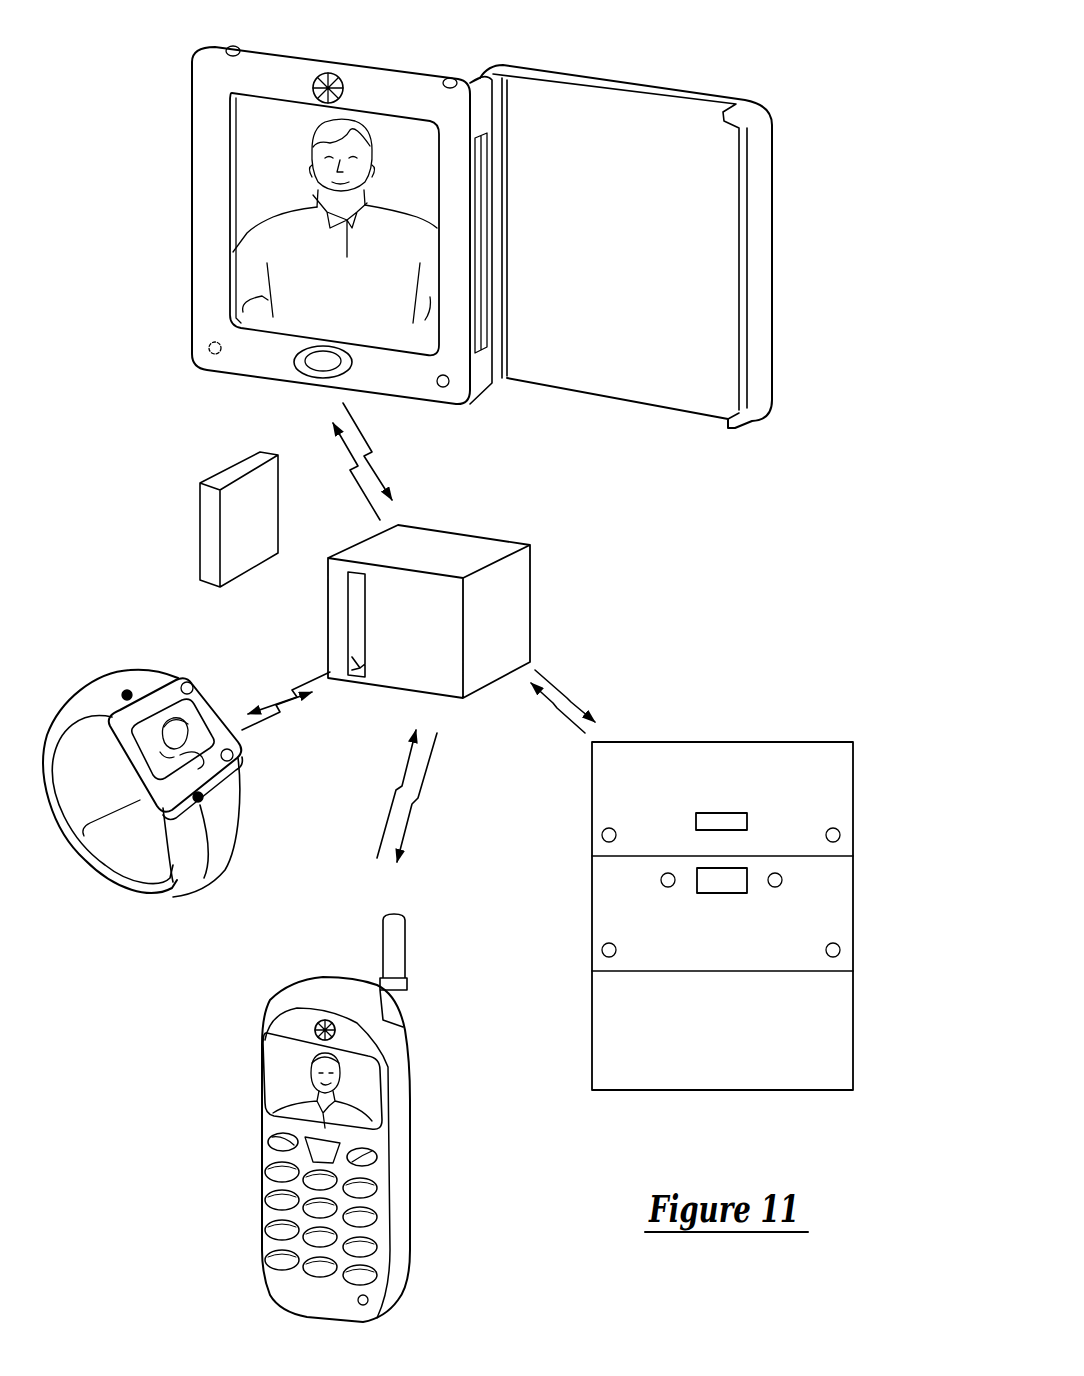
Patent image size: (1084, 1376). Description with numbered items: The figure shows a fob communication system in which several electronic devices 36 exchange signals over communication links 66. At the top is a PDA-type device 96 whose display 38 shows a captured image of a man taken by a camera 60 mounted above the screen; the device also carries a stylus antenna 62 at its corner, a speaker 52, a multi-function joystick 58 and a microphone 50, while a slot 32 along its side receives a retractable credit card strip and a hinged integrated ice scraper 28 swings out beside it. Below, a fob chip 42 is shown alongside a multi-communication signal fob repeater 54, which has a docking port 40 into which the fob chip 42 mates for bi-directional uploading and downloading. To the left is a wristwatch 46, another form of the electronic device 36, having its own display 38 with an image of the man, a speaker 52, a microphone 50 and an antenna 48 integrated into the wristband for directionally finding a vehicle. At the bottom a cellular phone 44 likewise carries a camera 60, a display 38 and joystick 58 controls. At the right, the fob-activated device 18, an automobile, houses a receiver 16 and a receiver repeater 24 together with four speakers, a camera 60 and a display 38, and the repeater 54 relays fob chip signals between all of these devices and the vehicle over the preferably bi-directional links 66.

The device 96 is at (165, 150).
The display 38 is at (250, 193).
The camera 60 is at (330, 82).
The stylus antenna 62 is at (232, 48).
The speaker 52 is at (208, 348).
The multi-function joystick 58 is at (350, 365).
The microphone 50 is at (445, 388).
The slot 32 is at (482, 328).
The integrated ice scraper 28 is at (672, 360).
The fob chip 42 is at (198, 528).
The multi-communication signal fob repeater 54 is at (450, 552).
The docking port 40 is at (352, 668).
The wristwatch 46 is at (176, 702).
The electronic device 36 is at (166, 672).
The antenna 48 is at (125, 693).
The communication links 66 is at (322, 437).
The cellular phone 44 is at (397, 1268).
The fob-activated device 18 is at (806, 732).
The receiver 16 is at (730, 759).
The receiver repeater 24 is at (723, 812).